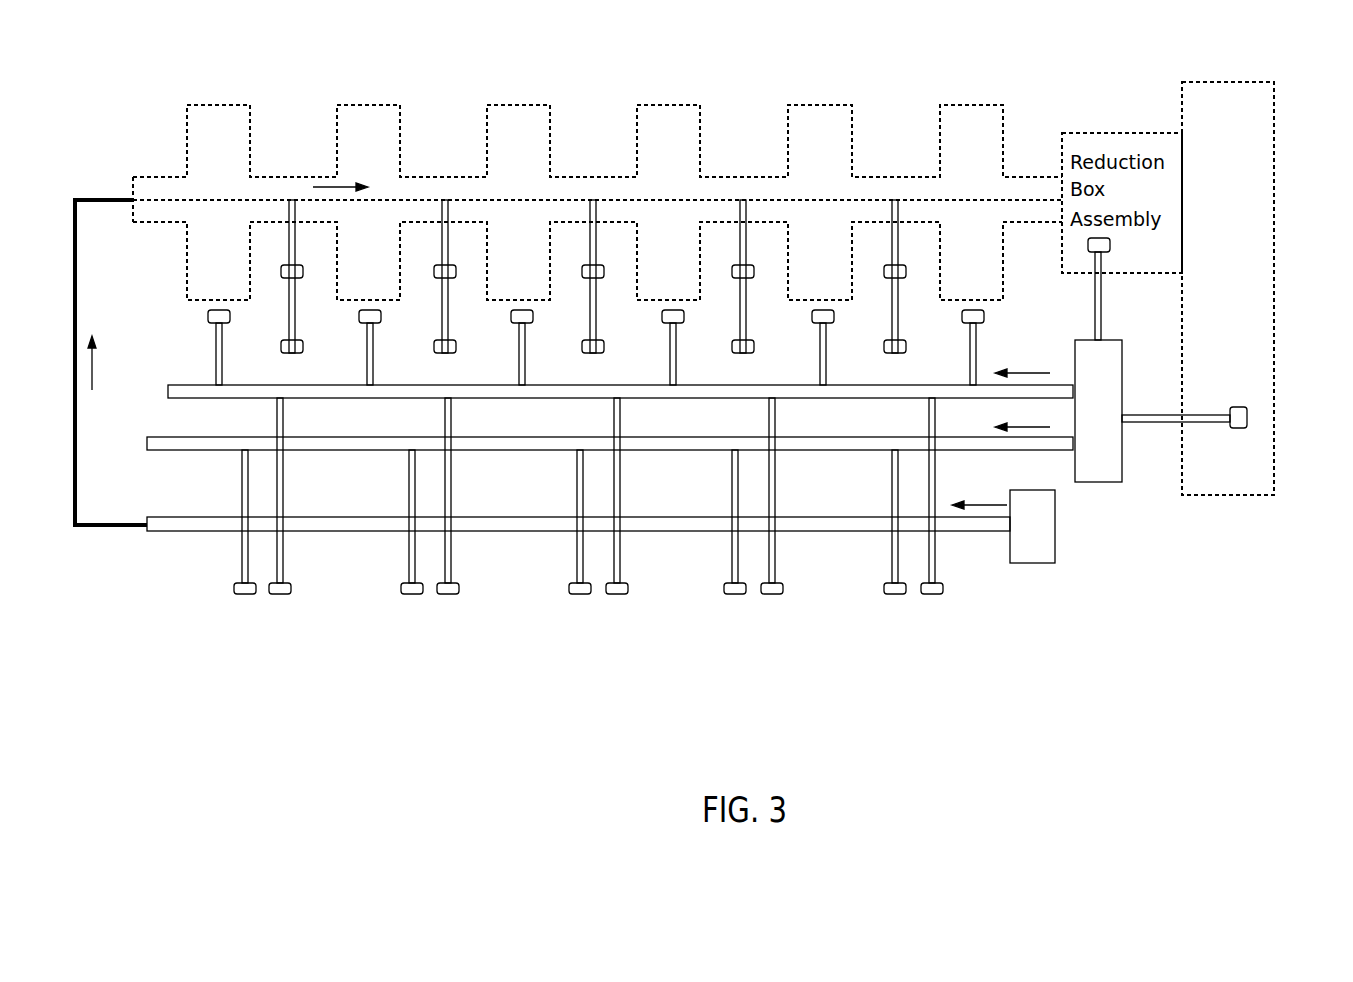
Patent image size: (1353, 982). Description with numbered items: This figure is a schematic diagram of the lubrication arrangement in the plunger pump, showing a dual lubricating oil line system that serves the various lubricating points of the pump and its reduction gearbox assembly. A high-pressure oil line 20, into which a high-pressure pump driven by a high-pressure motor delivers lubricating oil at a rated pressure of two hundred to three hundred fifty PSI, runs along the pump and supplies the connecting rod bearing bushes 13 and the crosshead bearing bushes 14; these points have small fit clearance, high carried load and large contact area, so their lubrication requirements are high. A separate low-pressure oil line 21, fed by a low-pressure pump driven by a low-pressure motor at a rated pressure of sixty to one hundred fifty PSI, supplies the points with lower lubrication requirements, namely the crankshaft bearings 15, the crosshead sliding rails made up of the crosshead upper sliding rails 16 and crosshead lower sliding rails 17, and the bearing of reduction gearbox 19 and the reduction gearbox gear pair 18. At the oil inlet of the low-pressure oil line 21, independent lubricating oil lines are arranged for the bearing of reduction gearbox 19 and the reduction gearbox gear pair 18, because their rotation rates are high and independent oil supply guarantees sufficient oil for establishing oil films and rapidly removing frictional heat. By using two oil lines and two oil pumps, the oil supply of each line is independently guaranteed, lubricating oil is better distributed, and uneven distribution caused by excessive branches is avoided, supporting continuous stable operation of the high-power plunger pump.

The connecting rod bearing bushes 13 is at (288, 267).
The crosshead bearing bushes 14 is at (288, 338).
The crankshaft bearings 15 is at (215, 310).
The crosshead upper sliding rails 16 is at (285, 594).
The crosshead lower sliding rails 17 is at (250, 594).
The reduction gearbox gear pair 18 is at (1112, 237).
The bearing of reduction gearbox 19 is at (1247, 418).
The high-pressure oil line 20 is at (1027, 535).
The low-pressure oil line 21 is at (1102, 455).